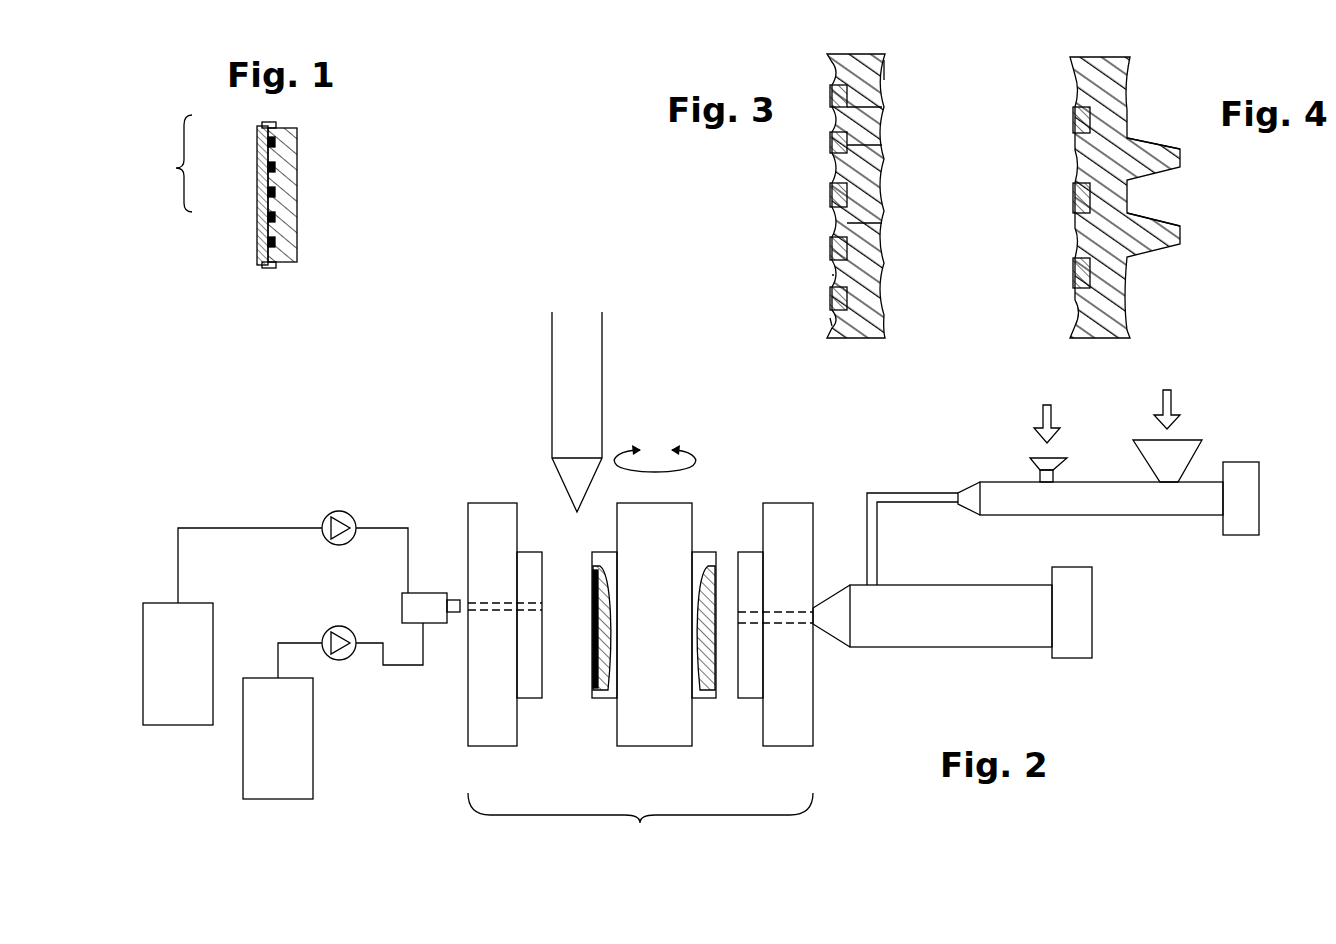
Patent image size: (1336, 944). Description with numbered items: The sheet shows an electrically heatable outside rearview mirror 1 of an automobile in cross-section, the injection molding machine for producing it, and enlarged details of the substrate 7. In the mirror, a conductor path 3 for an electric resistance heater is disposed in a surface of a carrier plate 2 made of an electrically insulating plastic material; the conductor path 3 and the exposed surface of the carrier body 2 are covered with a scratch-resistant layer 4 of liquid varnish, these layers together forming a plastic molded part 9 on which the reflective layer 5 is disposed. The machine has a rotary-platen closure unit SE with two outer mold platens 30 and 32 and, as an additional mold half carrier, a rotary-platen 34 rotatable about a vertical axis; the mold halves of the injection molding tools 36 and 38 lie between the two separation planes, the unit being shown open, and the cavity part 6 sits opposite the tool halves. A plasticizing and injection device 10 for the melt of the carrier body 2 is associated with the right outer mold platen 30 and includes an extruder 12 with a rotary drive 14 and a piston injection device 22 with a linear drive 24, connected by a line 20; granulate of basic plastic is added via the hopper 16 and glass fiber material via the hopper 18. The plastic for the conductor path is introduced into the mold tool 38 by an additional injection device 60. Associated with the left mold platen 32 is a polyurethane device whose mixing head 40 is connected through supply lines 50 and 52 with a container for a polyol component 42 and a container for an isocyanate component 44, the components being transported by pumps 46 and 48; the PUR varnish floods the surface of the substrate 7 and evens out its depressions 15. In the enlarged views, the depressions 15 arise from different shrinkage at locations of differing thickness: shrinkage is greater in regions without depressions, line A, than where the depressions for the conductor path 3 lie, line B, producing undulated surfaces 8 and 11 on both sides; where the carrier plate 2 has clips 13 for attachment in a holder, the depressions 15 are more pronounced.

In FIG. 1, the electrically heatable outside rearview mirror 1 is at (263, 195).
In FIG. 1, the carrier plate 2 is at (262, 134).
In FIG. 3, the carrier plate 2 is at (832, 67).
In FIG. 4, the carrier plate 2 is at (1080, 70).
In FIG. 2, the carrier plate 2 is at (598, 562).
In FIG. 1, the conductor path 3 is at (262, 169).
In FIG. 3, the conductor path 3 is at (830, 146).
In FIG. 2, the conductor path 3 is at (596, 588).
In FIG. 1, the scratch-resistant layer 4 is at (262, 203).
In FIG. 1, the reflective layer 5 is at (257, 239).
In FIG. 2, the second mold cavity part 6 is at (708, 562).
In FIG. 3, the substrate 7 is at (846, 195).
In FIG. 4, the substrate 7 is at (1121, 196).
In FIG. 2, the substrate 7 is at (578, 600).
In FIG. 3, the undulated surface 8 is at (826, 275).
In FIG. 1, the plastic molded part 9 is at (174, 163).
In FIG. 2, the plasticizing and injection device 10 is at (714, 583).
In FIG. 3, the undulated surface 11 is at (887, 262).
In FIG. 2, the extruder 12 is at (1113, 504).
In FIG. 4, the clips 13 is at (1182, 158).
In FIG. 2, the rotary drive 14 is at (1238, 526).
In FIG. 3, the depressions 15 is at (887, 69).
In FIG. 4, the depressions 15 is at (1075, 161).
In FIG. 2, the hopper 16 is at (1186, 456).
In FIG. 2, the hopper 18 is at (1035, 466).
In FIG. 2, the line 20 is at (918, 497).
In FIG. 2, the piston injection device 22 is at (927, 634).
In FIG. 2, the linear drive 24 is at (1066, 658).
In FIG. 2, the right outer mold platen 30 is at (786, 514).
In FIG. 2, the left outer mold platen 32 is at (495, 513).
In FIG. 2, the rotary-platen 34 is at (646, 722).
In FIG. 2, the injection molding tool 36 is at (752, 690).
In FIG. 2, the injection molding tool 38 is at (538, 683).
In FIG. 2, the mixing head 40 is at (417, 602).
In FIG. 2, the container for polyol component 42 is at (180, 712).
In FIG. 2, the container for isocyanate component 44 is at (300, 758).
In FIG. 2, the pump 46 is at (346, 512).
In FIG. 2, the pump 48 is at (349, 657).
In FIG. 2, the supply line 50 is at (270, 528).
In FIG. 2, the supply line 52 is at (302, 641).
In FIG. 2, the additional injection device 60 is at (585, 366).
In FIG. 3, the line A is at (880, 224).
In FIG. 3, the line B is at (884, 152).
In FIG. 2, the rotary-platen closure unit SE is at (640, 824).